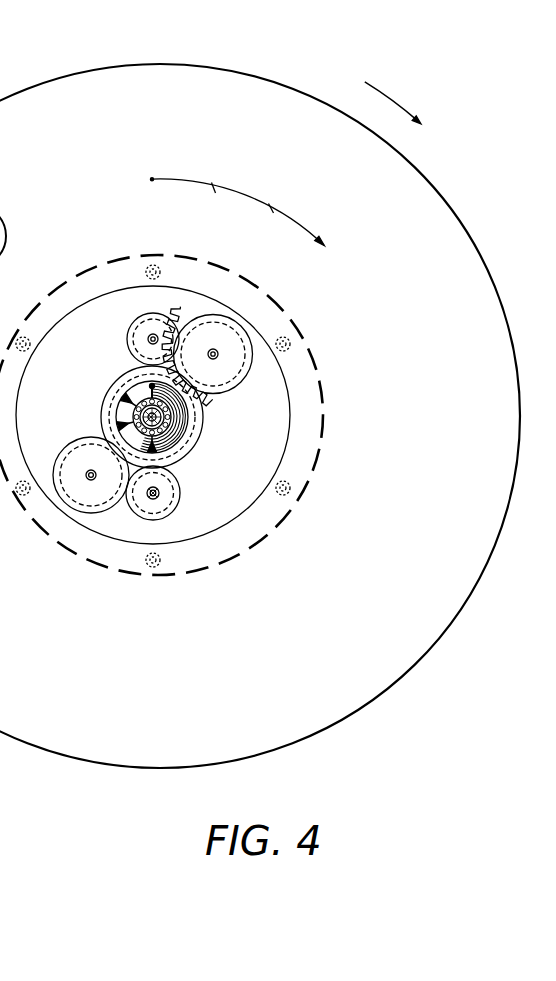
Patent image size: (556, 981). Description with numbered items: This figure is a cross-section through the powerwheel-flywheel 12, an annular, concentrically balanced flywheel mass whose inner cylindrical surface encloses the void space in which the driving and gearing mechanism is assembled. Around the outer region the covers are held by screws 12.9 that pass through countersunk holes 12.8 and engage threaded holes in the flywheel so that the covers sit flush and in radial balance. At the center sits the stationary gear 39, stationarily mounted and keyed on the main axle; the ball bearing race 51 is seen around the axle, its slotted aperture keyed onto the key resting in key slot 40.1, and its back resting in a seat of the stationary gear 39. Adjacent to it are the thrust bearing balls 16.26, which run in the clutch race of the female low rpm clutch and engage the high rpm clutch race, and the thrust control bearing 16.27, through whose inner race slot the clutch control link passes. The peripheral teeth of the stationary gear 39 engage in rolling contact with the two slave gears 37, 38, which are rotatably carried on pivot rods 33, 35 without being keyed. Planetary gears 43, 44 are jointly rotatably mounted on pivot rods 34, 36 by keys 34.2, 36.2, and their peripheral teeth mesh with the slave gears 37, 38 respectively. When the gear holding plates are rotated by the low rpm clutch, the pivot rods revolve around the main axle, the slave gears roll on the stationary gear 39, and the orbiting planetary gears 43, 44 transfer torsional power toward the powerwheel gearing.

The powerwheel-flywheel 12 is at (193, 619).
The hole 12.8 is at (160, 561).
The screw 12.9 is at (119, 452).
The pivot rod 33 is at (210, 348).
The pivot rod 34 is at (158, 336).
The key 34.2 is at (150, 341).
The pivot rod 35 is at (89, 483).
The pivot rod 36 is at (153, 493).
The key 36.2 is at (157, 491).
The slave gear 37 is at (213, 354).
The slave gear 38 is at (91, 475).
The stationary gear 39 is at (199, 414).
The key slot 40.1 is at (136, 395).
The planetary gear 43 is at (153, 339).
The planetary gear 44 is at (138, 506).
The ball bearing race 51 is at (131, 423).
The thrust bearing balls 16.26 is at (182, 443).
The thrust control bearing 16.27 is at (181, 422).